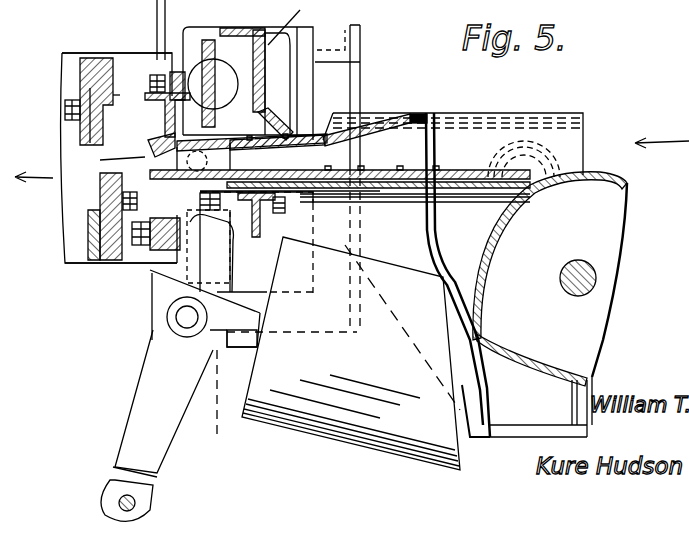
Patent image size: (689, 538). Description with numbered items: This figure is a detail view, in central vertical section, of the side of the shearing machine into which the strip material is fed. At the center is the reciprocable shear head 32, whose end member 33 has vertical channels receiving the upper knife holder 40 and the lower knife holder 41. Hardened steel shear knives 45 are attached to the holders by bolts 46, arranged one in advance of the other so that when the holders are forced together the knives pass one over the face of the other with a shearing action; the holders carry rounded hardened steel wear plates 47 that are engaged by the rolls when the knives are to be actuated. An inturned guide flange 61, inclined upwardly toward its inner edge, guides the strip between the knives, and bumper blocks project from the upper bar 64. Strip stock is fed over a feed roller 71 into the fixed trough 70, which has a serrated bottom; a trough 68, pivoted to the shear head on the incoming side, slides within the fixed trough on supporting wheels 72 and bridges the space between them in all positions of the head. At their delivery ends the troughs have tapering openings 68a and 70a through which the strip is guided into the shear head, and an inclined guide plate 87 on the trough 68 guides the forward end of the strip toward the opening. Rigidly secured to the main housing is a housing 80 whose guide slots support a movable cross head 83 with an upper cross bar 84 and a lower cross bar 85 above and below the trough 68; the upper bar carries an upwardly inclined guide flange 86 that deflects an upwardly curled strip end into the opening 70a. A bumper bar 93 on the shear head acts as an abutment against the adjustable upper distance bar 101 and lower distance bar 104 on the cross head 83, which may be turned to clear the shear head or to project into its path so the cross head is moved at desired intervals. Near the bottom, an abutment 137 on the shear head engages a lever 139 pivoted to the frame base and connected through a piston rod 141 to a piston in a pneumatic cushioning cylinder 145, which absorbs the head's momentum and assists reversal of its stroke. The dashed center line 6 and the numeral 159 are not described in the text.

The center line 6 is at (210, 406).
The shear head 32 is at (128, 52).
The end member 33 is at (62, 75).
The knife holder 40 is at (114, 100).
The knife holder 41 is at (88, 238).
The shear knife 45 is at (105, 127).
The bolt 46 is at (72, 122).
The wear plate 47 is at (98, 56).
The guide flange 61 is at (114, 163).
The upper bar 64 is at (173, 102).
The trough 68 is at (375, 224).
The tapering opening 68a is at (177, 158).
The fixed trough 70 is at (460, 177).
The tapering opening 70a is at (277, 150).
The feed roller 71 is at (551, 269).
The supporting wheel 72 is at (547, 160).
The housing 80 is at (333, 32).
The cross head 83 is at (307, 93).
The upper cross bar 84 is at (292, 22).
The lower cross bar 85 is at (323, 301).
The guide flange 86 is at (340, 142).
The guide plate 87 is at (373, 122).
The bumper bar 93 is at (165, 6).
The upper distance bar 101 is at (215, 70).
The lower distance bar 104 is at (205, 308).
The abutment 137 is at (167, 250).
The lever 139 is at (140, 406).
The piston rod 141 is at (240, 350).
The pneumatic cushioning cylinder 145 is at (330, 437).
The bolt 159 is at (150, 250).